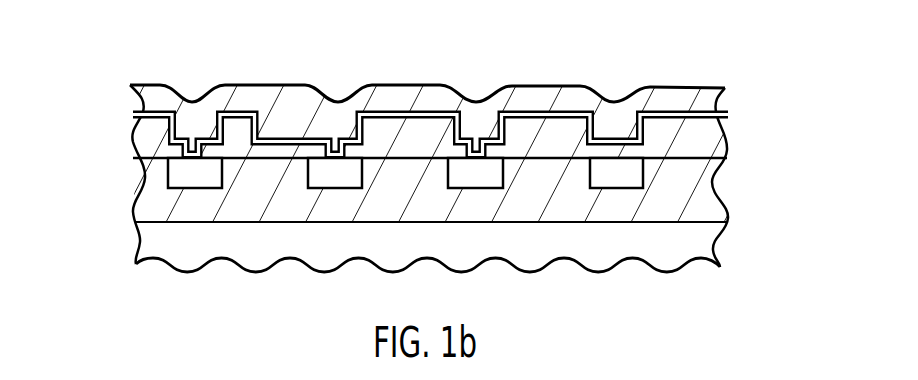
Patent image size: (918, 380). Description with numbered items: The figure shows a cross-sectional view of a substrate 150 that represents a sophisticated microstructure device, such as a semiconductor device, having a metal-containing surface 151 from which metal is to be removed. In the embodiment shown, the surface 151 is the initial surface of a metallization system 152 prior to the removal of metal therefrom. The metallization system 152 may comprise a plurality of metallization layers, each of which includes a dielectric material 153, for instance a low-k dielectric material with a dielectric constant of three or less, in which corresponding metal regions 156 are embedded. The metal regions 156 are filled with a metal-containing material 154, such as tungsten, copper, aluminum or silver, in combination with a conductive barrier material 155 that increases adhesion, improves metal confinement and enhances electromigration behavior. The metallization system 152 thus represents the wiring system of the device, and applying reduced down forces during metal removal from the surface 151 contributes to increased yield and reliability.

The substrate 150 is at (746, 90).
The surface 151 is at (406, 76).
The metallization system 152 is at (123, 177).
The dielectric material 153 is at (141, 139).
The metal-containing material 154 is at (131, 99).
The conductive barrier material 155 is at (146, 110).
The metal regions 156 is at (286, 119).